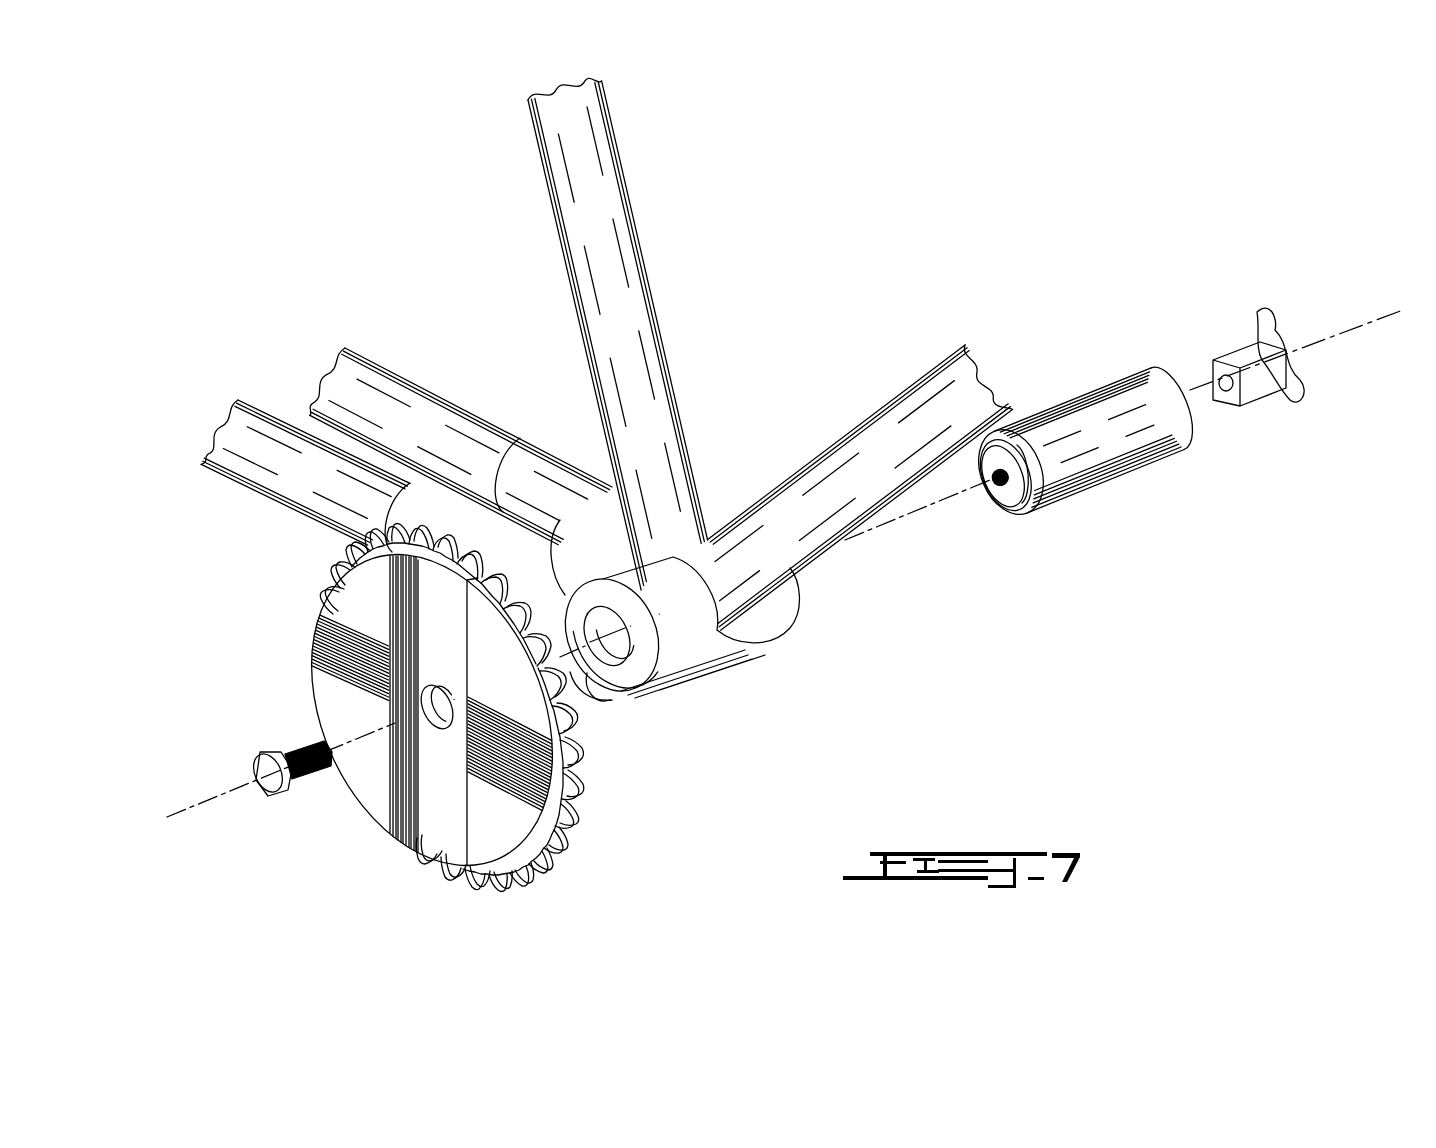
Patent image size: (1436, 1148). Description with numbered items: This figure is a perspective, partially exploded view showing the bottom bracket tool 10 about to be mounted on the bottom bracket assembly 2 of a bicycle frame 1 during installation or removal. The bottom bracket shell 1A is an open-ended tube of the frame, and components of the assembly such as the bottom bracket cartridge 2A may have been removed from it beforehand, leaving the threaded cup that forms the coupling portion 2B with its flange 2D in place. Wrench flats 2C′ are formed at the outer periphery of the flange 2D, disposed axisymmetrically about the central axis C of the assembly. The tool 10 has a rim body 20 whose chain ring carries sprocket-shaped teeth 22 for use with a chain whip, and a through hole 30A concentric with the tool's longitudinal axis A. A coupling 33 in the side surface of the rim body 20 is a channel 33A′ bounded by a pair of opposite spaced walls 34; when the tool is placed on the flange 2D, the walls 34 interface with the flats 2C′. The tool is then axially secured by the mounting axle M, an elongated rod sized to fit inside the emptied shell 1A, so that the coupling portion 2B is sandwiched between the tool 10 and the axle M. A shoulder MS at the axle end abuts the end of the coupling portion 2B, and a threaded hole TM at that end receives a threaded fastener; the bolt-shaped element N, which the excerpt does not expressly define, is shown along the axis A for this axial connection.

The bicycle frame 1 is at (606, 362).
The bottom bracket shell 1A is at (807, 637).
The bottom bracket assembly 2 is at (970, 519).
The bottom bracket cartridge 2A is at (1228, 318).
The coupling portion 2B is at (620, 712).
The wrench flats 2C′ is at (577, 560).
The flange 2D is at (652, 655).
The bottom bracket tool 10 is at (402, 712).
The rim body 20 is at (528, 765).
The teeth 22 is at (548, 818).
The through hole 30A is at (427, 723).
The coupling 33 is at (430, 838).
The channel 33A′ is at (437, 783).
The opposite walls 34 is at (402, 602).
The longitudinal axis A is at (188, 808).
The central axis C is at (1380, 318).
The mounting axle M is at (1068, 448).
The shoulder MS is at (1028, 508).
The fastening nut/bolt N is at (270, 797).
The threaded hole TM is at (997, 480).